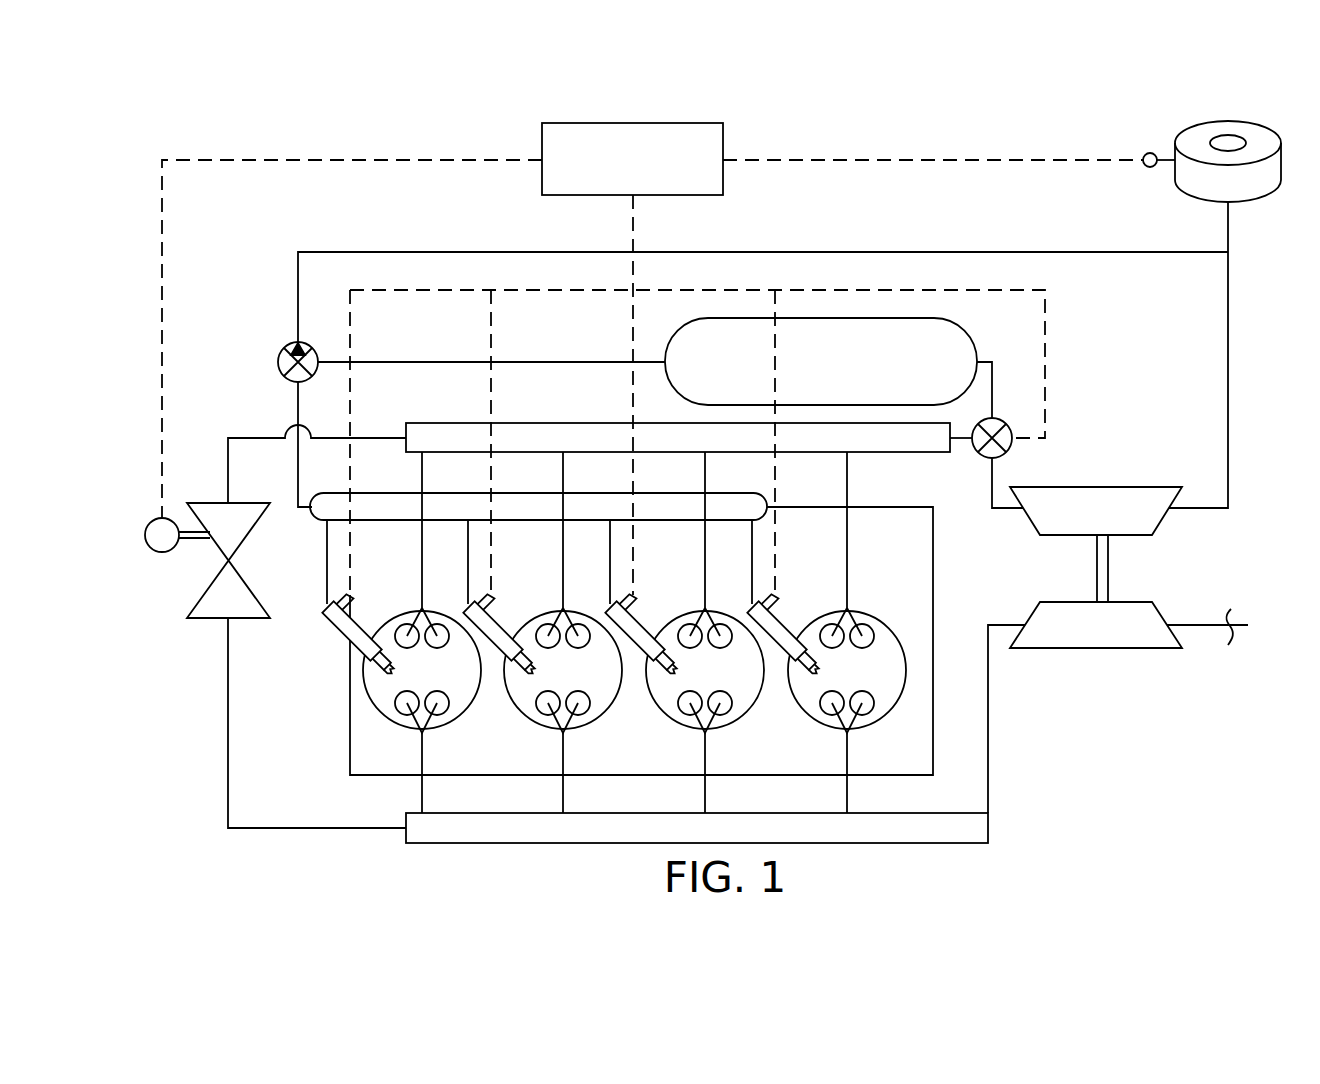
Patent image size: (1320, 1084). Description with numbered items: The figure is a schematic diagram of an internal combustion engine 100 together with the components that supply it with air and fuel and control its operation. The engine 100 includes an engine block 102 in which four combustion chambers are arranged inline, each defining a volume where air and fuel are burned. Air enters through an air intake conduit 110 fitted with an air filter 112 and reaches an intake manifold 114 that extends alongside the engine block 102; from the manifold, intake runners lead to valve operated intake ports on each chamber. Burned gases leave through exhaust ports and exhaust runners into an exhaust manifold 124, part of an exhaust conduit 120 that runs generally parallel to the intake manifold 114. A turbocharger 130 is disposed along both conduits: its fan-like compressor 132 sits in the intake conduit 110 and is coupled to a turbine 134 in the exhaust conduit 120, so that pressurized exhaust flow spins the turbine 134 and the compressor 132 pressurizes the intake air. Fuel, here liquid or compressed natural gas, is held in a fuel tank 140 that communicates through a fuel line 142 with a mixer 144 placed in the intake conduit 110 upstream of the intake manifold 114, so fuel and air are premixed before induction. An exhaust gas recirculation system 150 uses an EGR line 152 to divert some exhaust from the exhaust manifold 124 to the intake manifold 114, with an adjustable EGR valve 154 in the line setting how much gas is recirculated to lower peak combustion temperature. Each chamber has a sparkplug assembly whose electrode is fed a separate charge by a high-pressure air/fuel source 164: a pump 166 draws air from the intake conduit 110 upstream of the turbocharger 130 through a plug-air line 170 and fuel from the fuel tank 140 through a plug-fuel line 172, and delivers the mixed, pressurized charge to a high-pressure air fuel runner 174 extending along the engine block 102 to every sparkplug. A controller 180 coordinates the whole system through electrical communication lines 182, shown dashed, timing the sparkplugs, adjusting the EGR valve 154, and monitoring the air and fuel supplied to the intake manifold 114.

The internal combustion engine 100 is at (634, 686).
The engine block 102 is at (905, 567).
The air intake conduit 110 is at (1217, 500).
The air filter 112 is at (1195, 140).
The intake manifold 114 is at (607, 440).
The exhaust conduit 120 is at (988, 790).
The exhaust manifold 124 is at (905, 848).
The turbocharger 130 is at (1136, 562).
The compressor 132 is at (1107, 487).
The turbine 134 is at (1129, 655).
The fuel tank 140 is at (804, 393).
The fuel line 142 is at (995, 395).
The mixer 144 is at (1012, 450).
The exhaust gas recirculation system 150 is at (267, 631).
The EGR line 152 is at (227, 793).
The EGR valve 154 is at (207, 502).
The high-pressure air/fuel source 164 is at (249, 372).
The pump 166 is at (258, 415).
The plug-air line 170 is at (795, 250).
The plug-fuel line 172 is at (527, 360).
The high-pressure air fuel runner 174 is at (377, 493).
The controller 180 is at (615, 190).
The electrical communication line 182 is at (425, 158).